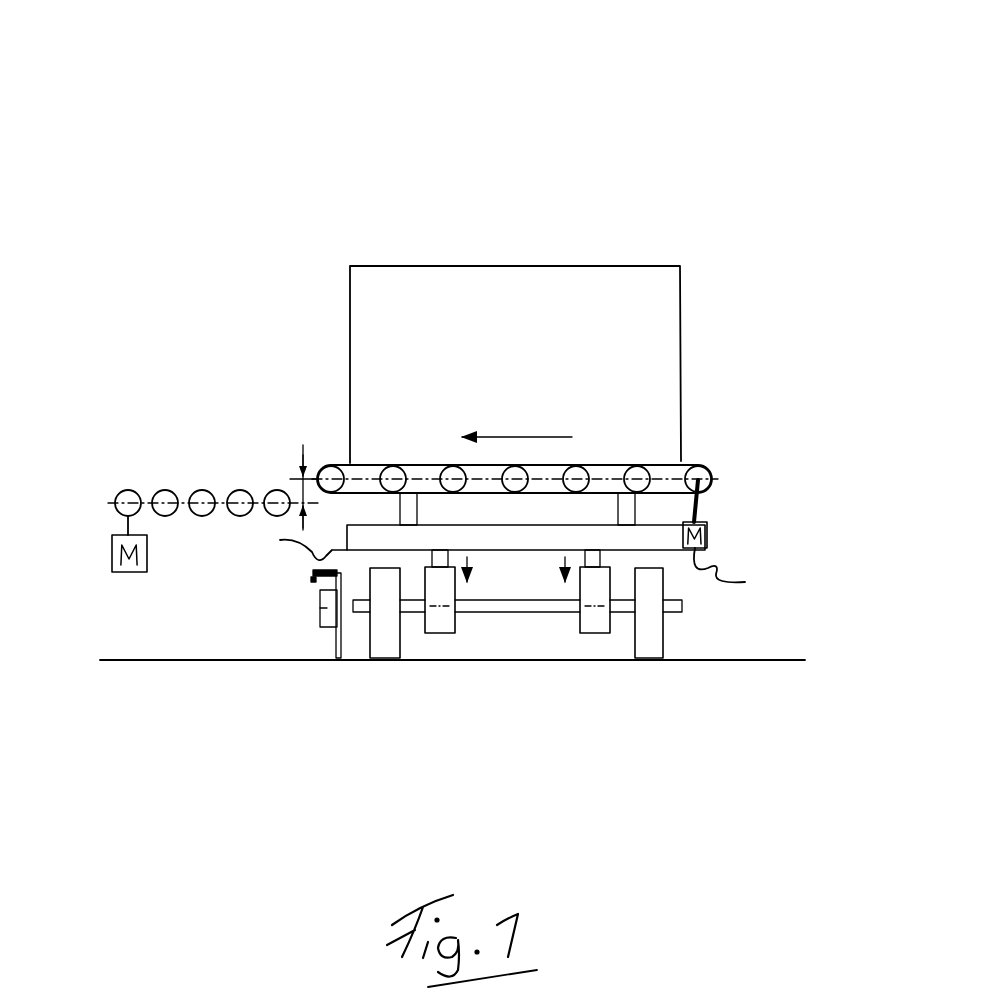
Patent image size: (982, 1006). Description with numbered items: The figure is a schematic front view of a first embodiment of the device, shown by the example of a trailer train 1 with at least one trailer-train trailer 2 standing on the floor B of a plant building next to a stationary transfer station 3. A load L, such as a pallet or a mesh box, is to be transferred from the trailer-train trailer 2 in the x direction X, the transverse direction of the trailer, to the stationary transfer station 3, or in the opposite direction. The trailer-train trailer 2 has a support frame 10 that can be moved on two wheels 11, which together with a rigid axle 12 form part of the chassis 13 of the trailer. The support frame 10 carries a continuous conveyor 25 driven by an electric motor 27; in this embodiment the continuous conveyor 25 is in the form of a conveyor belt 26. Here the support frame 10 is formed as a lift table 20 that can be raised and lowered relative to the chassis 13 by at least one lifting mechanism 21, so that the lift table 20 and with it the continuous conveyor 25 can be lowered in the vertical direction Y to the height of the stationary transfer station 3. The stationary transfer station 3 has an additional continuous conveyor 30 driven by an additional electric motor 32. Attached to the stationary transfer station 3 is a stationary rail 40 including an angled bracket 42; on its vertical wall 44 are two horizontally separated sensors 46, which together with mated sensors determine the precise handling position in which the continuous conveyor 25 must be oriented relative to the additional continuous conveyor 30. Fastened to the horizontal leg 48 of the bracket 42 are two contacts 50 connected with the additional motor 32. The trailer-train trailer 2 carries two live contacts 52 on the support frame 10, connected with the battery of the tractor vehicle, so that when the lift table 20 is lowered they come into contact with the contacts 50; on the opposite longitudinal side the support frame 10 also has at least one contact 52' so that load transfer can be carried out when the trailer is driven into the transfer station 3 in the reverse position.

The trailer train 1 is at (335, 183).
The trailer-train trailer 2 is at (783, 460).
The stationary transfer station 3 is at (200, 479).
The support frame 10 is at (530, 540).
The wheels 11 is at (385, 645).
The rigid axle 12 is at (515, 605).
The chassis 13 is at (705, 625).
The lift table 20 is at (551, 326).
The lifting mechanism 21 is at (440, 625).
The continuous conveyor 25 is at (575, 169).
The conveyor belt 26 is at (412, 460).
The electric motor 27 is at (710, 540).
The additional continuous conveyor 30 is at (240, 495).
The additional electric motor 32 is at (114, 570).
The stationary rail 40 is at (322, 645).
The angled bracket 42 is at (307, 725).
The vertical wall 44 is at (376, 725).
The sensors 46 is at (327, 608).
The horizontal leg 48 is at (313, 578).
The contacts 50 is at (313, 572).
The live contacts 52 is at (286, 545).
The contact 52' is at (751, 574).
The floor B is at (165, 726).
The load L is at (658, 316).
The x direction X is at (505, 432).
The vertical direction y Y is at (302, 500).